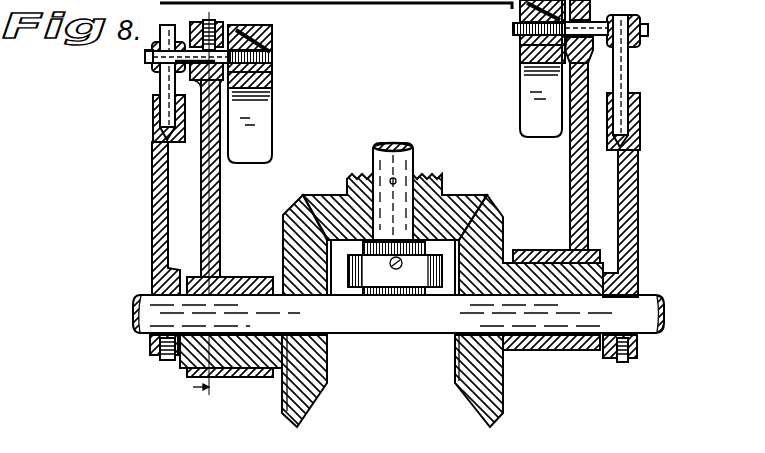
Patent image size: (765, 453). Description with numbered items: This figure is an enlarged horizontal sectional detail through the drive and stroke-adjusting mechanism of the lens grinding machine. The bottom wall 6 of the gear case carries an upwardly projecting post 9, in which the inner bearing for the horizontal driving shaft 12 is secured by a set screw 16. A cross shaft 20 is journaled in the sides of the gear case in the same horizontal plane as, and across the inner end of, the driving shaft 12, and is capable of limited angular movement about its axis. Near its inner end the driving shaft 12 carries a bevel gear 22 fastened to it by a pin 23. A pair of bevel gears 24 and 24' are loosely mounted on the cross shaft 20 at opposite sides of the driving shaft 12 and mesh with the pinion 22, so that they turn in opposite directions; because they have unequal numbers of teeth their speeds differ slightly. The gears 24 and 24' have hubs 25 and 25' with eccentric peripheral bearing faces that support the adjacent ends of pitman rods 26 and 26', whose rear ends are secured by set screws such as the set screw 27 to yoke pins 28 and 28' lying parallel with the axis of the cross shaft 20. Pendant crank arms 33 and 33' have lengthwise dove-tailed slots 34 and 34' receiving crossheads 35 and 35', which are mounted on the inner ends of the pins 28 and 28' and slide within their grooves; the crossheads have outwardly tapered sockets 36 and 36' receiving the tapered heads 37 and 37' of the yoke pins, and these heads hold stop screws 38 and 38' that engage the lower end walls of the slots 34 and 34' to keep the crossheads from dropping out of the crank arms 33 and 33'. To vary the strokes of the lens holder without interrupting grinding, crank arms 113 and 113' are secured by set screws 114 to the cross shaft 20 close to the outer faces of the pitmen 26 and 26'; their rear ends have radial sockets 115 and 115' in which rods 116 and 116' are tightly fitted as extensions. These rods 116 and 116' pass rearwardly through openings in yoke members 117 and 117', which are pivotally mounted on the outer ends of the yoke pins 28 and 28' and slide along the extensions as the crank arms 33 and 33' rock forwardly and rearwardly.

The bottom wall 6 is at (322, 3).
The post 9 is at (210, 12).
The driving shaft 12 is at (393, 143).
The set screw 16 is at (390, 263).
The cross shaft 20 is at (140, 315).
The bevel gear 22 is at (455, 198).
The pin 23 is at (390, 179).
The bevel gear 24 is at (291, 311).
The bevel gear 24' is at (529, 311).
The hub 25 is at (231, 374).
The hub 25' is at (551, 291).
The pitman rod 26 is at (230, 187).
The pitman rod 26' is at (566, 125).
The set screw 27 is at (207, 21).
The yoke pin 28 is at (169, 59).
The yoke pin 28' is at (623, 33).
The crank arm 33 is at (266, 94).
The crank arm 33' is at (526, 68).
The slot 34 is at (267, 85).
The slot 34' is at (526, 67).
The crosshead 35 is at (267, 40).
The crosshead 35' is at (523, 14).
The socket 36 is at (250, 27).
The socket 36' is at (542, 11).
The head 37 is at (270, 72).
The head 37' is at (526, 52).
The stop screw 38 is at (271, 56).
The stop screw 38' is at (523, 36).
The crank arm 113 is at (144, 219).
The crank arm 113' is at (646, 223).
The set screw 114 is at (168, 358).
The radial socket 115 is at (146, 123).
The radial socket 115' is at (646, 121).
The rod 116 is at (145, 82).
The rod 116' is at (647, 81).
The yoke member 117 is at (146, 66).
The yoke member 117' is at (647, 39).